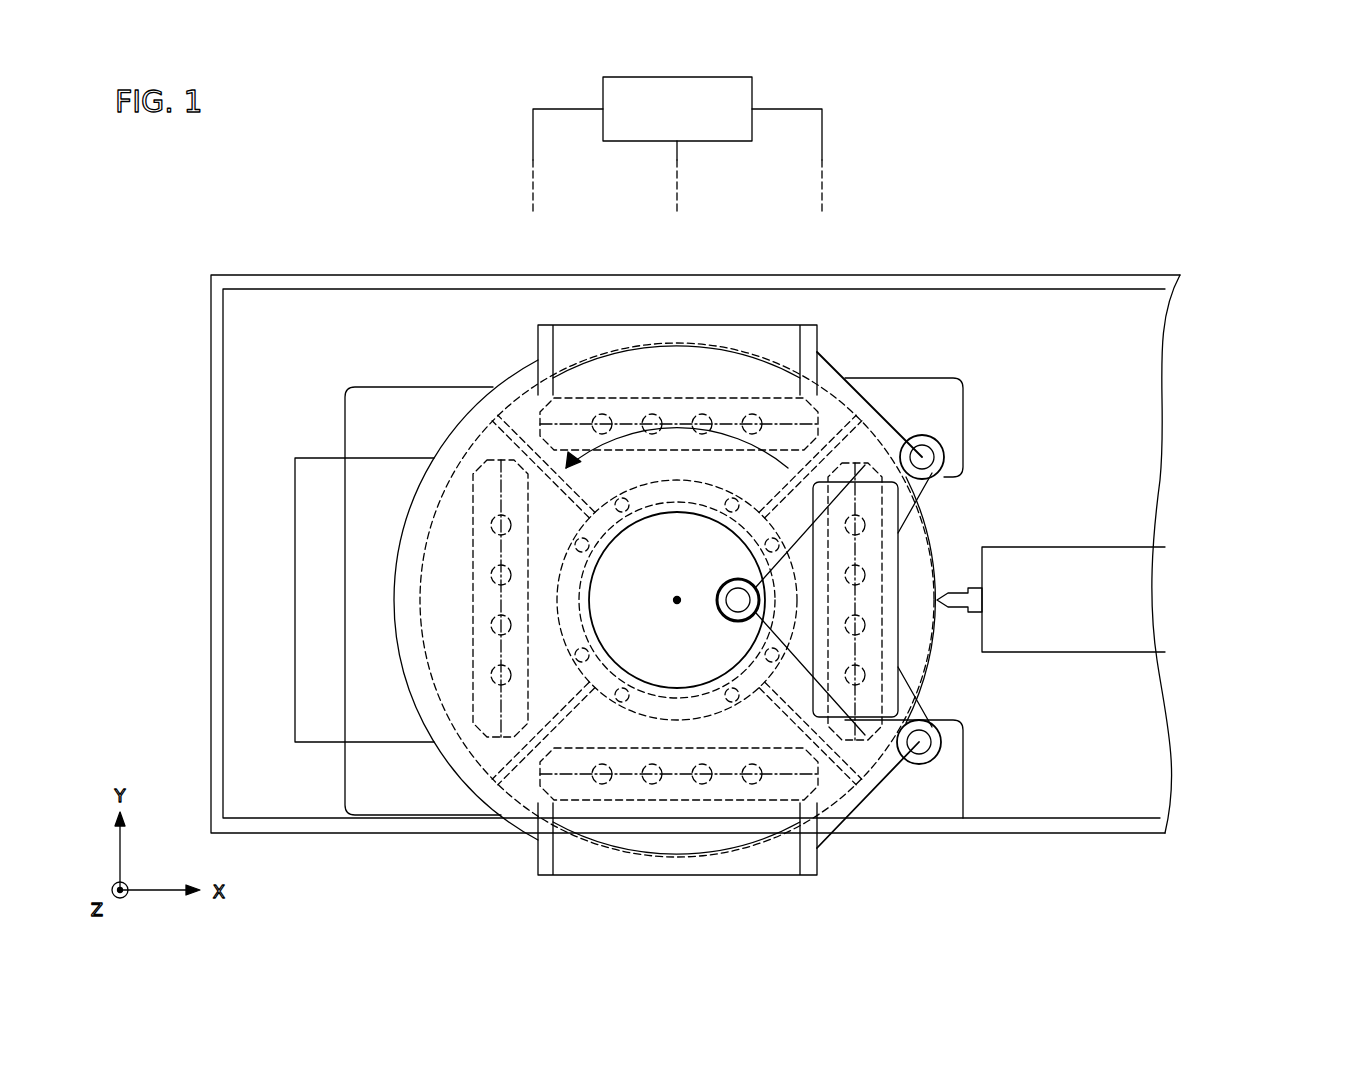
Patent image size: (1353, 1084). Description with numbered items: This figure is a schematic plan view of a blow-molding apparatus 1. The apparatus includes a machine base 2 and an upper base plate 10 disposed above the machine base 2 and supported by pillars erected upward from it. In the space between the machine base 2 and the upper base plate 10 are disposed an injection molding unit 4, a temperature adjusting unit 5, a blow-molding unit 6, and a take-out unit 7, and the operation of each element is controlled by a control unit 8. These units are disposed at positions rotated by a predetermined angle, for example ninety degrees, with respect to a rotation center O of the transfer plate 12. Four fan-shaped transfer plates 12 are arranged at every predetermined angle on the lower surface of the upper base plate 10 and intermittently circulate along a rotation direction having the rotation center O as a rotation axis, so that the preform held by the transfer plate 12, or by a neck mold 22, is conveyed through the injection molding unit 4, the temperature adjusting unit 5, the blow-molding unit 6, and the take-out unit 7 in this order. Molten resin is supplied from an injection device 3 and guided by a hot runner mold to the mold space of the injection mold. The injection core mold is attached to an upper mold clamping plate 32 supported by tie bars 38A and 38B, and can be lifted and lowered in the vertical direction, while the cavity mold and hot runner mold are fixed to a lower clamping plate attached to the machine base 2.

The blow-molding apparatus 1 is at (1232, 291).
The machine base 2 is at (1045, 808).
The injection device 3 is at (1040, 548).
The injection molding unit 4 is at (935, 508).
The temperature adjusting unit 5 is at (713, 377).
The blow-molding unit 6 is at (487, 438).
The take-out unit 7 is at (568, 810).
The control unit 8 is at (752, 92).
The upper base plate 10 is at (870, 800).
The transfer plate 12 is at (523, 405).
The neck mold 22 is at (620, 400).
The upper mold clamping plate 32 is at (843, 480).
The tie bar 38A is at (922, 455).
The tie bar 38B is at (738, 604).
The rotation center O is at (677, 600).